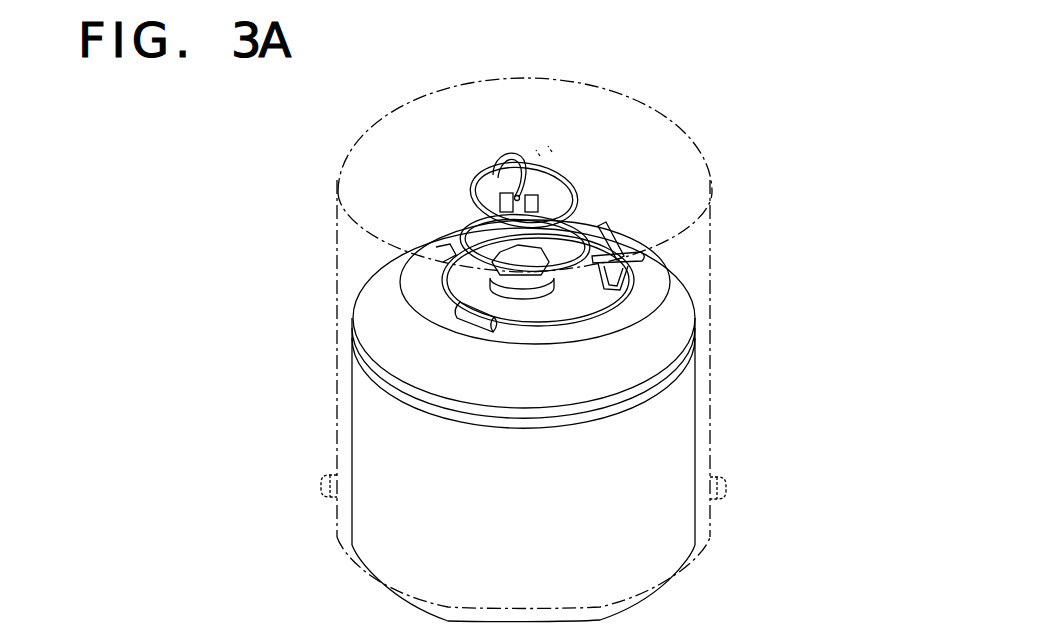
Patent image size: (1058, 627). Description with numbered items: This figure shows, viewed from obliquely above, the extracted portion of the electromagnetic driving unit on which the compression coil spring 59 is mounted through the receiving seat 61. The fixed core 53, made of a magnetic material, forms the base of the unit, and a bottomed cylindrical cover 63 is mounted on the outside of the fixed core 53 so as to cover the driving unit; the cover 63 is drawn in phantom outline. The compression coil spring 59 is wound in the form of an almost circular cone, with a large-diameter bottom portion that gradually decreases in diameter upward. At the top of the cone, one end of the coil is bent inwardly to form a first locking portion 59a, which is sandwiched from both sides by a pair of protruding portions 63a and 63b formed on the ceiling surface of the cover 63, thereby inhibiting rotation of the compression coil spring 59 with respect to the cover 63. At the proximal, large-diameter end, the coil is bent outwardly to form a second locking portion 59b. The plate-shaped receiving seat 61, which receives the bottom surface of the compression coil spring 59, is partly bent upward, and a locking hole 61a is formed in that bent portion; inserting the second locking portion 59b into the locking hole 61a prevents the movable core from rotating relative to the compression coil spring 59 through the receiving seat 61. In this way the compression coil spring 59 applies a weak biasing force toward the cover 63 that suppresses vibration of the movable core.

The fixed core 53 is at (656, 536).
The compression coil spring 59 is at (585, 194).
The first locking portion 59a is at (508, 165).
The second locking portion 59b is at (648, 263).
The receiving seat 61 is at (477, 289).
The locking hole 61a is at (600, 222).
The cover 63 is at (676, 122).
The protruding portion 63a is at (550, 152).
The protruding portion 63b is at (538, 158).